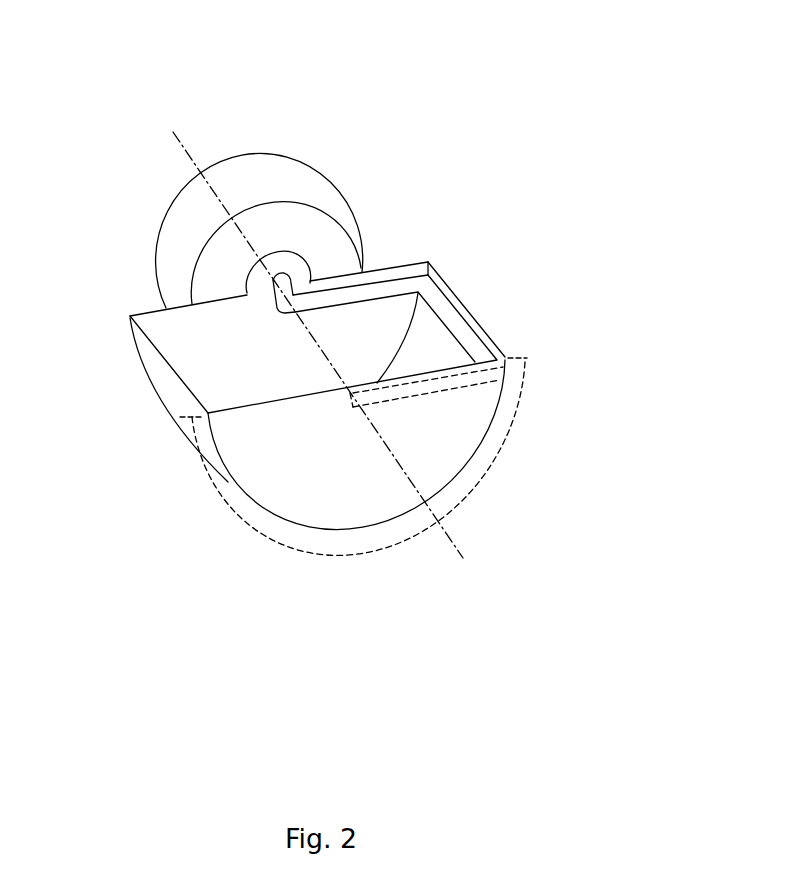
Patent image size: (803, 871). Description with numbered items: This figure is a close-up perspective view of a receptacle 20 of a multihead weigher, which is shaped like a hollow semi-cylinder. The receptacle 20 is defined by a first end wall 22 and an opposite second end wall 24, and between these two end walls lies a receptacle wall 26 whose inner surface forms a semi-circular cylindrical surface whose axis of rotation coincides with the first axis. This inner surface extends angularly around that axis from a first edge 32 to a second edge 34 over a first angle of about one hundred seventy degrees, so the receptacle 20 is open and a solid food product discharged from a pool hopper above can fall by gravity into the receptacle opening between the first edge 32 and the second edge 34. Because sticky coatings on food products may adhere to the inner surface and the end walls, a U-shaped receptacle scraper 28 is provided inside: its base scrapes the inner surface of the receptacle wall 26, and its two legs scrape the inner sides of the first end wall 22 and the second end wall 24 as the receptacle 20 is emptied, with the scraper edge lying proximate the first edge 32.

The receptacle 20 is at (103, 158).
The first end wall 22 is at (187, 340).
The second end wall 24 is at (442, 453).
The receptacle wall 26 is at (422, 340).
The receptacle scraper 28 is at (443, 317).
The first edge 32 is at (187, 150).
The second edge 34 is at (175, 375).